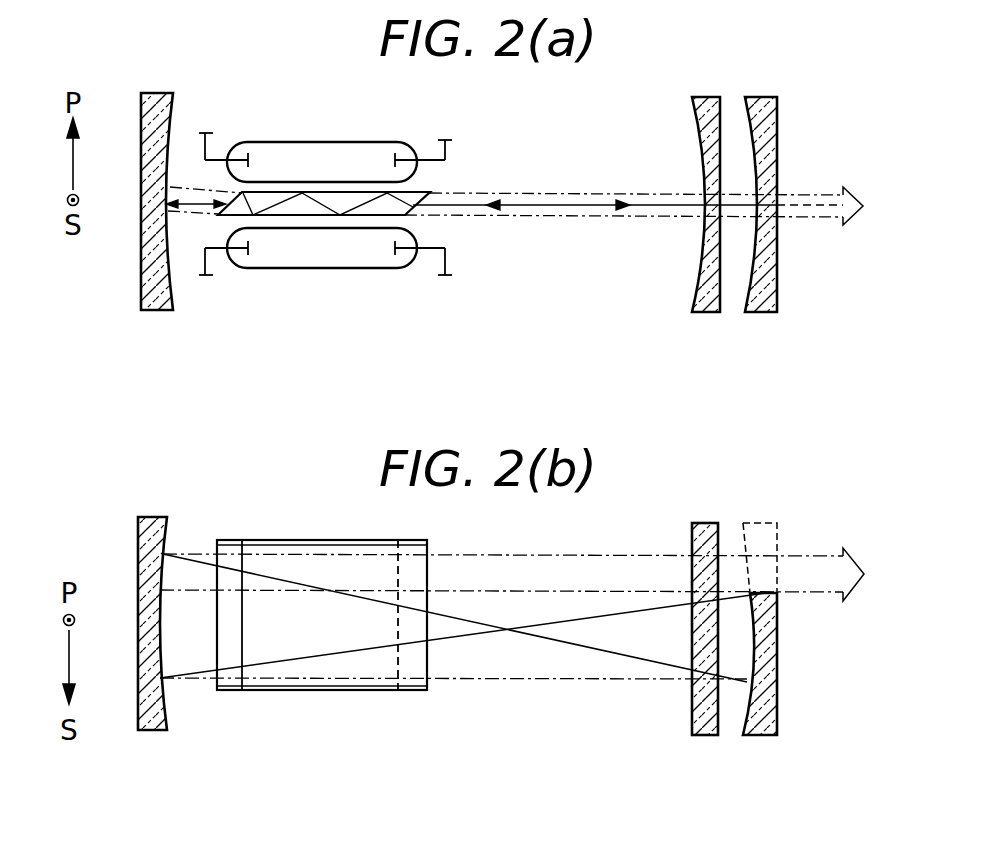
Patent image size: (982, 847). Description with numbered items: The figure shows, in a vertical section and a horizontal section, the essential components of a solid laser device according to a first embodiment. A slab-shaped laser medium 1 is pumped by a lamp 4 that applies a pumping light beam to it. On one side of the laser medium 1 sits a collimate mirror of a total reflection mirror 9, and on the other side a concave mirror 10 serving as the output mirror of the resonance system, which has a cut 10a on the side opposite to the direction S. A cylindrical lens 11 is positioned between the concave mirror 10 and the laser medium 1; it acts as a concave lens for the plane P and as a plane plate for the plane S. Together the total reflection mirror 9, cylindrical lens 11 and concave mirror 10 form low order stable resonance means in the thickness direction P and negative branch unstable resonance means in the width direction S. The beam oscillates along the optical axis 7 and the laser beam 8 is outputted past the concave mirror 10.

In FIG. 2A, the slab-shaped laser medium 1 is at (303, 191).
In FIG. 2B, the slab-shaped laser medium 1 is at (333, 692).
In FIG. 2A, the lamp 4 is at (349, 142).
In FIG. 2A, the optical axis of a laser beam 7 is at (566, 205).
In FIG. 2A, the laser beam 8 is at (803, 193).
In FIG. 2B, the laser beam 8 is at (823, 548).
In FIG. 2A, the collimate mirror of a total reflection mirror 9 is at (165, 311).
In FIG. 2B, the collimate mirror of a total reflection mirror 9 is at (157, 731).
In FIG. 2A, the concave mirror 10 is at (770, 313).
In FIG. 2B, the concave mirror 10 is at (768, 736).
In FIG. 2B, the cut 10a is at (762, 520).
In FIG. 2A, the cylindrical lens 11 is at (710, 313).
In FIG. 2B, the cylindrical lens 11 is at (705, 736).